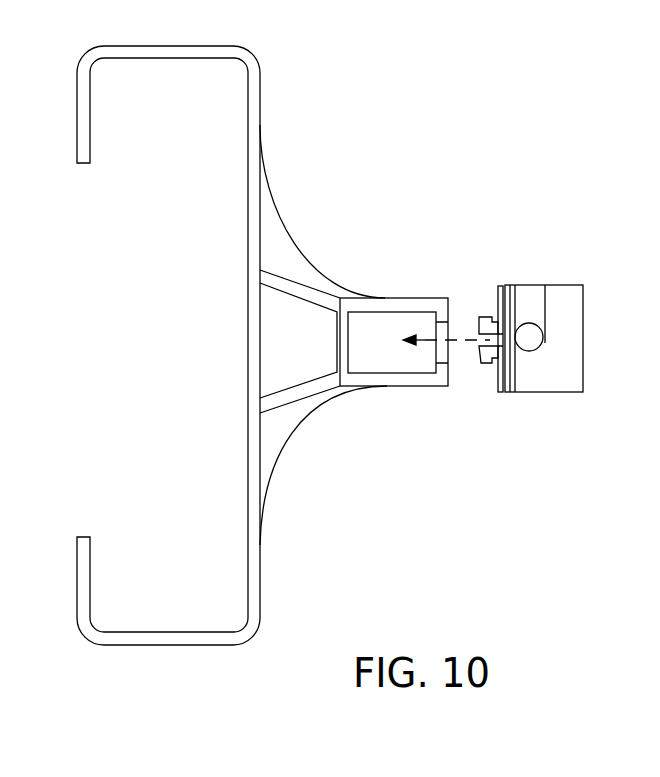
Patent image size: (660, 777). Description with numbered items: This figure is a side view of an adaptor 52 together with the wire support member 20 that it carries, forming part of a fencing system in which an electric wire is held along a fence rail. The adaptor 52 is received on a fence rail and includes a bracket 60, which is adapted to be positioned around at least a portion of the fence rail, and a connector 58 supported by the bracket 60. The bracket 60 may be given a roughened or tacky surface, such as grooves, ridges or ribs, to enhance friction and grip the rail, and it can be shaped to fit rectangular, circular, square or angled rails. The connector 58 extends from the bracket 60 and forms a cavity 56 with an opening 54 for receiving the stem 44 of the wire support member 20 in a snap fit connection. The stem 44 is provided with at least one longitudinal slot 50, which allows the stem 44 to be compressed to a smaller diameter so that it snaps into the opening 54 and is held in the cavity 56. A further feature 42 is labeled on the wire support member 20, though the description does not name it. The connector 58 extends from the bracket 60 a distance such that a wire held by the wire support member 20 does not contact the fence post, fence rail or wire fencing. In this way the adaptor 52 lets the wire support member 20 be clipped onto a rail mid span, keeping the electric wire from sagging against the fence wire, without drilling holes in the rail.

The wire support member 20 is at (580, 312).
The aperture 42 is at (541, 346).
The stem 44 is at (499, 286).
The longitudinal slot 50 is at (497, 363).
The adaptor 52 is at (350, 127).
The opening 54 is at (450, 357).
The cavity 56 is at (397, 320).
The connector 58 is at (318, 420).
The bracket 60 is at (262, 78).